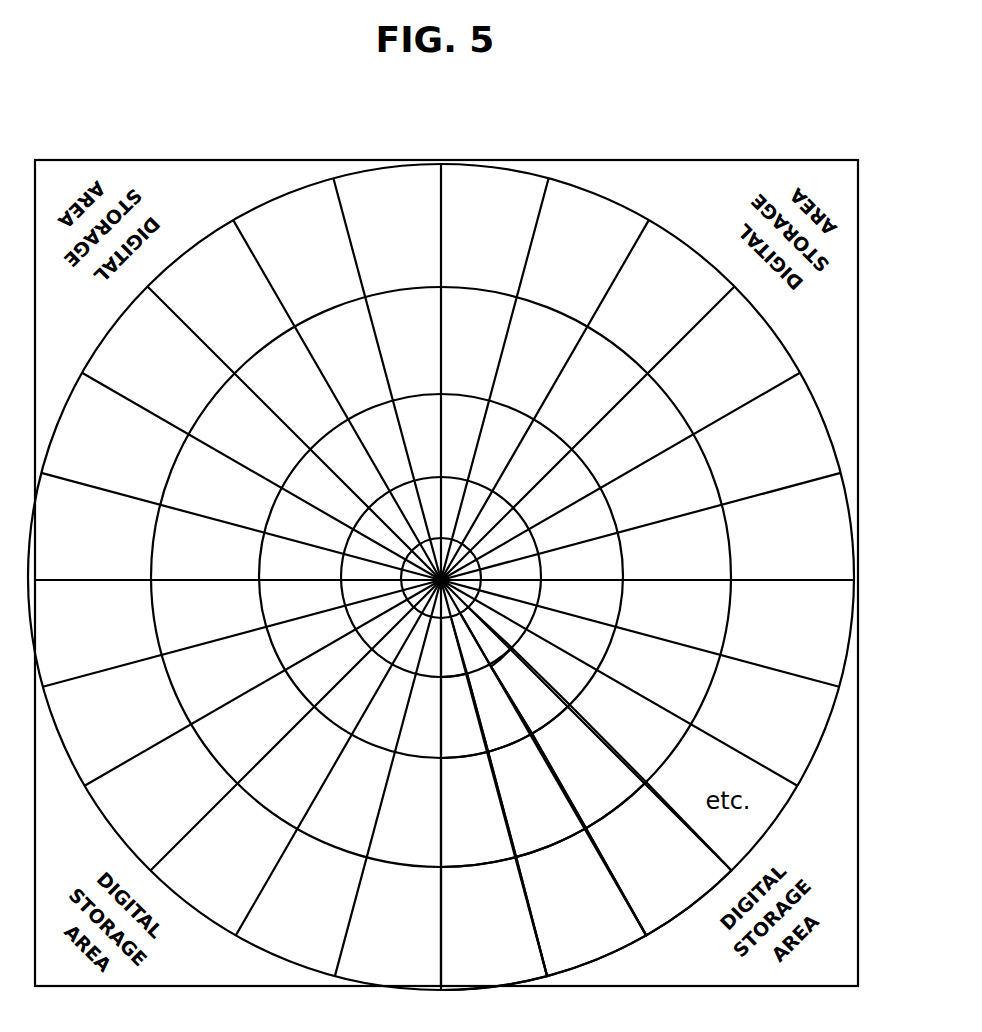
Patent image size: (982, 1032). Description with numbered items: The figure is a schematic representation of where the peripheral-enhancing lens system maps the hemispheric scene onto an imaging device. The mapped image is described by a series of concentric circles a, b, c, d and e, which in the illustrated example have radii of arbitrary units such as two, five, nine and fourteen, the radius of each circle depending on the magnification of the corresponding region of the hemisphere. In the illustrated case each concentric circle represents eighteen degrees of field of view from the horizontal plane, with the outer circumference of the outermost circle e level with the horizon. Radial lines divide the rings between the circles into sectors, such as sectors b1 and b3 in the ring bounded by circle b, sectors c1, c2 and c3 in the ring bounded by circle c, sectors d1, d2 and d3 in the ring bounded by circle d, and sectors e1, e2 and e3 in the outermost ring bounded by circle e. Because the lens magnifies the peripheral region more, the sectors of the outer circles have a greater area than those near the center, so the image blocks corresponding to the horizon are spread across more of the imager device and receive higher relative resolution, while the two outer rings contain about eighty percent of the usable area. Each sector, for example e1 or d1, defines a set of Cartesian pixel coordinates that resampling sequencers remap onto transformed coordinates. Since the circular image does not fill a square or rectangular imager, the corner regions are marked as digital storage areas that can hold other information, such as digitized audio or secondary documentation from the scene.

The concentric circle a is at (477, 568).
The concentric circle b is at (537, 543).
The concentric circle c is at (612, 512).
The concentric circle d is at (708, 473).
The concentric circle e is at (827, 422).
The sector b1 is at (448, 655).
The sector b3 is at (488, 643).
The sector c1 is at (464, 716).
The sector c2 is at (499, 709).
The sector c3 is at (530, 691).
The sector d1 is at (478, 809).
The sector d2 is at (537, 796).
The sector d3 is at (589, 767).
The sector e1 is at (494, 923).
The sector e2 is at (581, 902).
The sector e3 is at (659, 858).